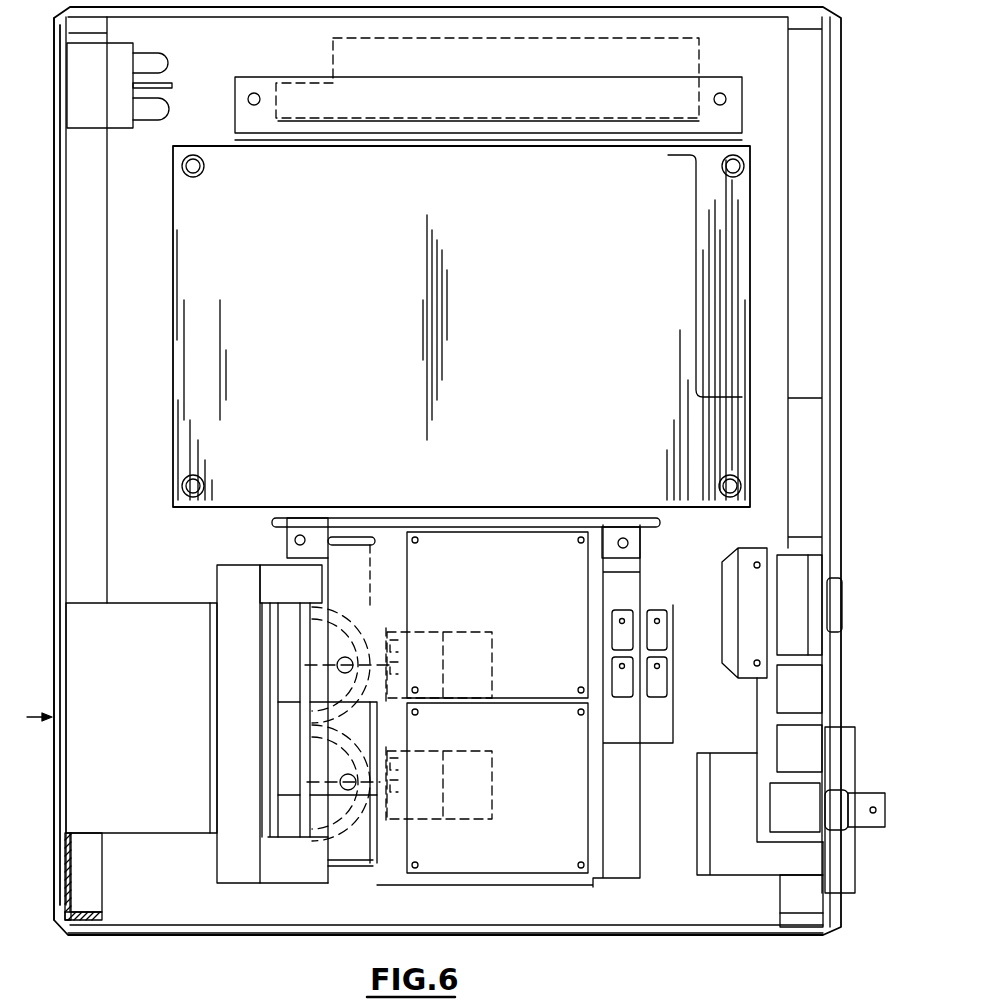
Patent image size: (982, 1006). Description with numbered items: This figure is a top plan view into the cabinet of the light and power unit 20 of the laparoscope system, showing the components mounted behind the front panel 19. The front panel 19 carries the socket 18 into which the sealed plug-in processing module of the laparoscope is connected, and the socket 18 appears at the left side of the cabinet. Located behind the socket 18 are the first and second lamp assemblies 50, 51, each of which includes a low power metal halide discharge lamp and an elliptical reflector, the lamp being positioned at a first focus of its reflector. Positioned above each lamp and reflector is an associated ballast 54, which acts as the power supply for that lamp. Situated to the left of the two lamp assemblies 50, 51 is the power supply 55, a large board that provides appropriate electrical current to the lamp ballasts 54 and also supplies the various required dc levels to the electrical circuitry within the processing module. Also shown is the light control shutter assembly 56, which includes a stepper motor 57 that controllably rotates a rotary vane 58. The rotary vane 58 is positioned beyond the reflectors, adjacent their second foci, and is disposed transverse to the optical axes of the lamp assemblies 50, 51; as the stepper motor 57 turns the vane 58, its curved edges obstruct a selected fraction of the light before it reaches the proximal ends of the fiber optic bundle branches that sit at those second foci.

The socket 18 is at (157, 613).
The front panel 19 is at (53, 450).
The light and power unit 20 is at (665, 933).
The first lamp assembly 50 is at (357, 840).
The second lamp assembly 51 is at (372, 627).
The ballast 54 is at (582, 603).
The power supply 55 is at (697, 495).
The light control shutter assembly 56 is at (272, 592).
The stepper motor 57 is at (375, 727).
The rotary vane 58 is at (262, 780).